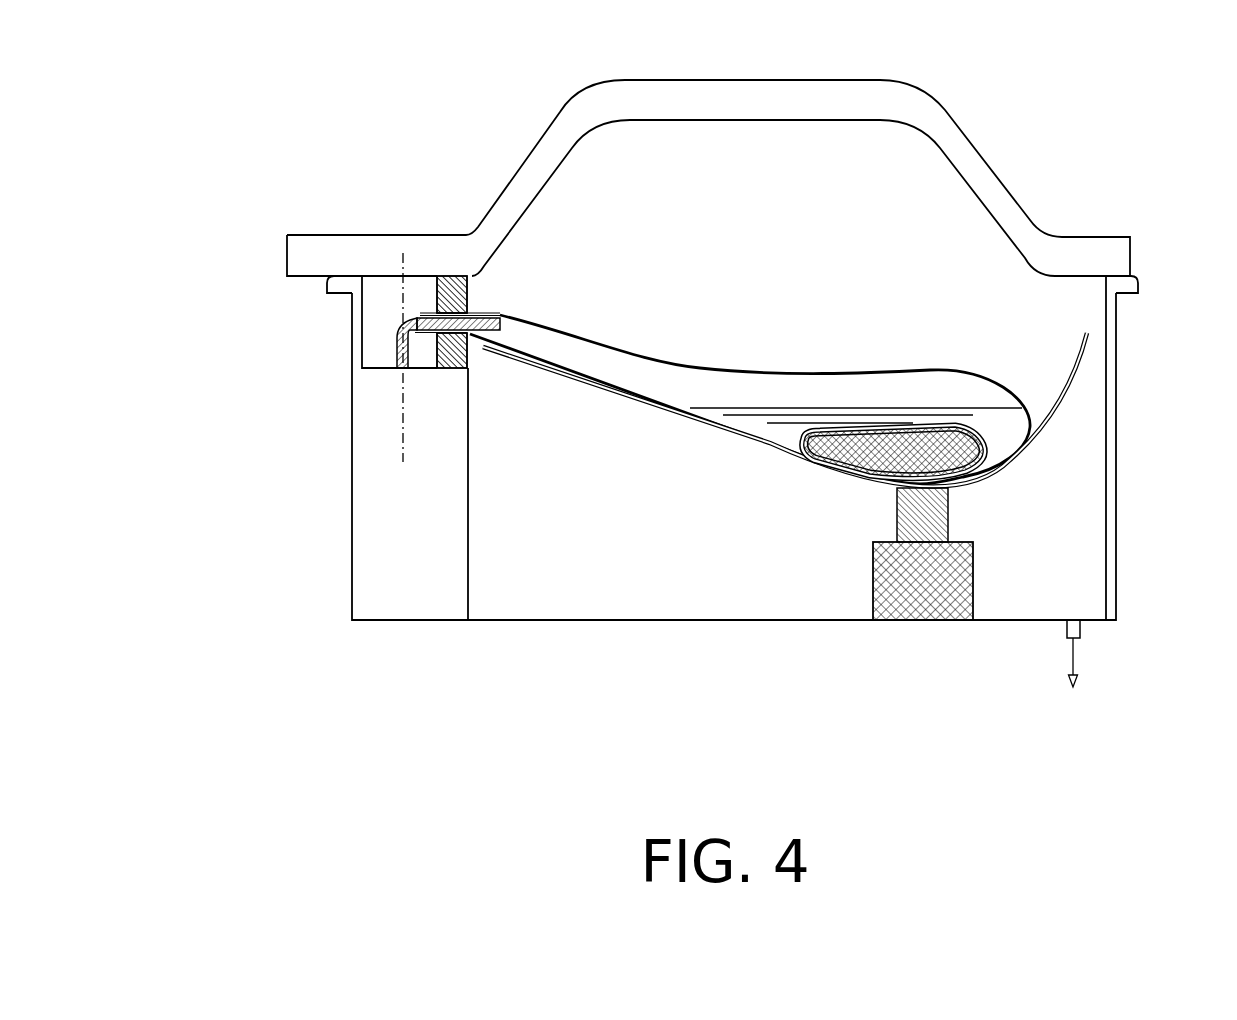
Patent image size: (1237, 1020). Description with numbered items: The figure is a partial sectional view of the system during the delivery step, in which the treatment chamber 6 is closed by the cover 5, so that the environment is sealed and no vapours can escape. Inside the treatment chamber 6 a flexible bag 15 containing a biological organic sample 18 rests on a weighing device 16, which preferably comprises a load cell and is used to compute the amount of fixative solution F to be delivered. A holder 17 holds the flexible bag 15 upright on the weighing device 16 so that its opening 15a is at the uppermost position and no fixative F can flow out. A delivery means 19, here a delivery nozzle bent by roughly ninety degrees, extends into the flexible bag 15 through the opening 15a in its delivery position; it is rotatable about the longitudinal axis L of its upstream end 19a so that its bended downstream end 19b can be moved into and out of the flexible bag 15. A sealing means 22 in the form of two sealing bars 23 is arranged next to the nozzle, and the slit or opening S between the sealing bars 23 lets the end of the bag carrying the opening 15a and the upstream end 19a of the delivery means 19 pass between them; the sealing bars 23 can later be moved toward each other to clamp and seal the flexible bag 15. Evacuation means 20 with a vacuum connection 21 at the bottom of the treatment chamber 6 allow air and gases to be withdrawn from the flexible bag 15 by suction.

The cover 5 is at (993, 190).
The treatment chamber 6 is at (625, 570).
The flexible bag 15 is at (905, 368).
The opening 15a is at (408, 312).
The weighing device 16 is at (930, 603).
The holder 17 is at (673, 397).
The biological organic sample 18 is at (830, 453).
The delivery means 19 is at (442, 375).
The upstream end 19a is at (398, 352).
The bended downstream end 19b is at (497, 313).
The evacuation means 20 is at (1145, 653).
The vacuum connection 21 is at (1080, 630).
The sealing means 22 is at (489, 290).
The sealing bar 23 is at (437, 288).
The slit or opening S is at (475, 350).
The fixative solution F is at (1000, 430).
The longitudinal axis L is at (403, 450).